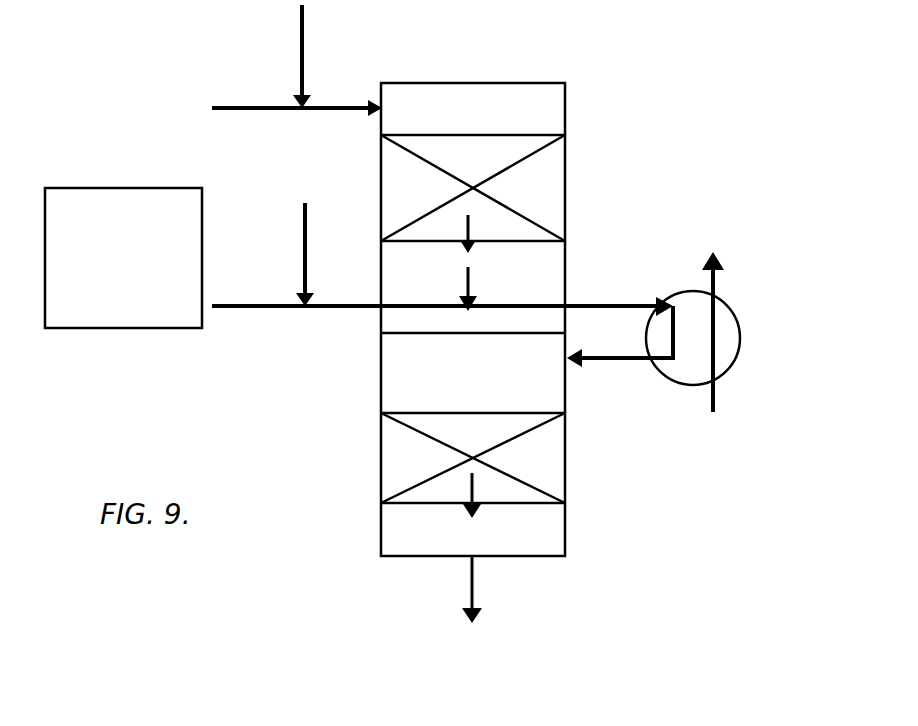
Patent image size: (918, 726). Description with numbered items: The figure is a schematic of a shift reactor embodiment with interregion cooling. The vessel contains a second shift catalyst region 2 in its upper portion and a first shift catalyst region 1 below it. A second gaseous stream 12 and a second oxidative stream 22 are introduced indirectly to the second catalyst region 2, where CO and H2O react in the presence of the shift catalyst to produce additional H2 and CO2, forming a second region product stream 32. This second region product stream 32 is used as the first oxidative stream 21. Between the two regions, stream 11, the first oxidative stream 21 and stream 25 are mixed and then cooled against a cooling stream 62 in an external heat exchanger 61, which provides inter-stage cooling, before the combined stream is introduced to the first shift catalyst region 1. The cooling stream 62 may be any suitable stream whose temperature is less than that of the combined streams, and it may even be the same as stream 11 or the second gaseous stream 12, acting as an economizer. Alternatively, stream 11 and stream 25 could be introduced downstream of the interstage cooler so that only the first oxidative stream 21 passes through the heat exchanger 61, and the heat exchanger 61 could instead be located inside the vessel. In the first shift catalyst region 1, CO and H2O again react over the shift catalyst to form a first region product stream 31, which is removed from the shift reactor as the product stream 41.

The first shift catalyst region 1 is at (540, 452).
The second shift catalyst region 2 is at (556, 200).
The stream 11 is at (280, 307).
The second gaseous stream 12 is at (262, 110).
The first oxidative stream 21 is at (470, 280).
The second oxidative stream 22 is at (303, 70).
The stream 25 is at (307, 253).
The first region product stream 31 is at (475, 495).
The second region product stream 32 is at (470, 227).
The product stream 41 is at (475, 590).
The heat exchanger 61 is at (722, 372).
The cooling stream 62 is at (715, 280).